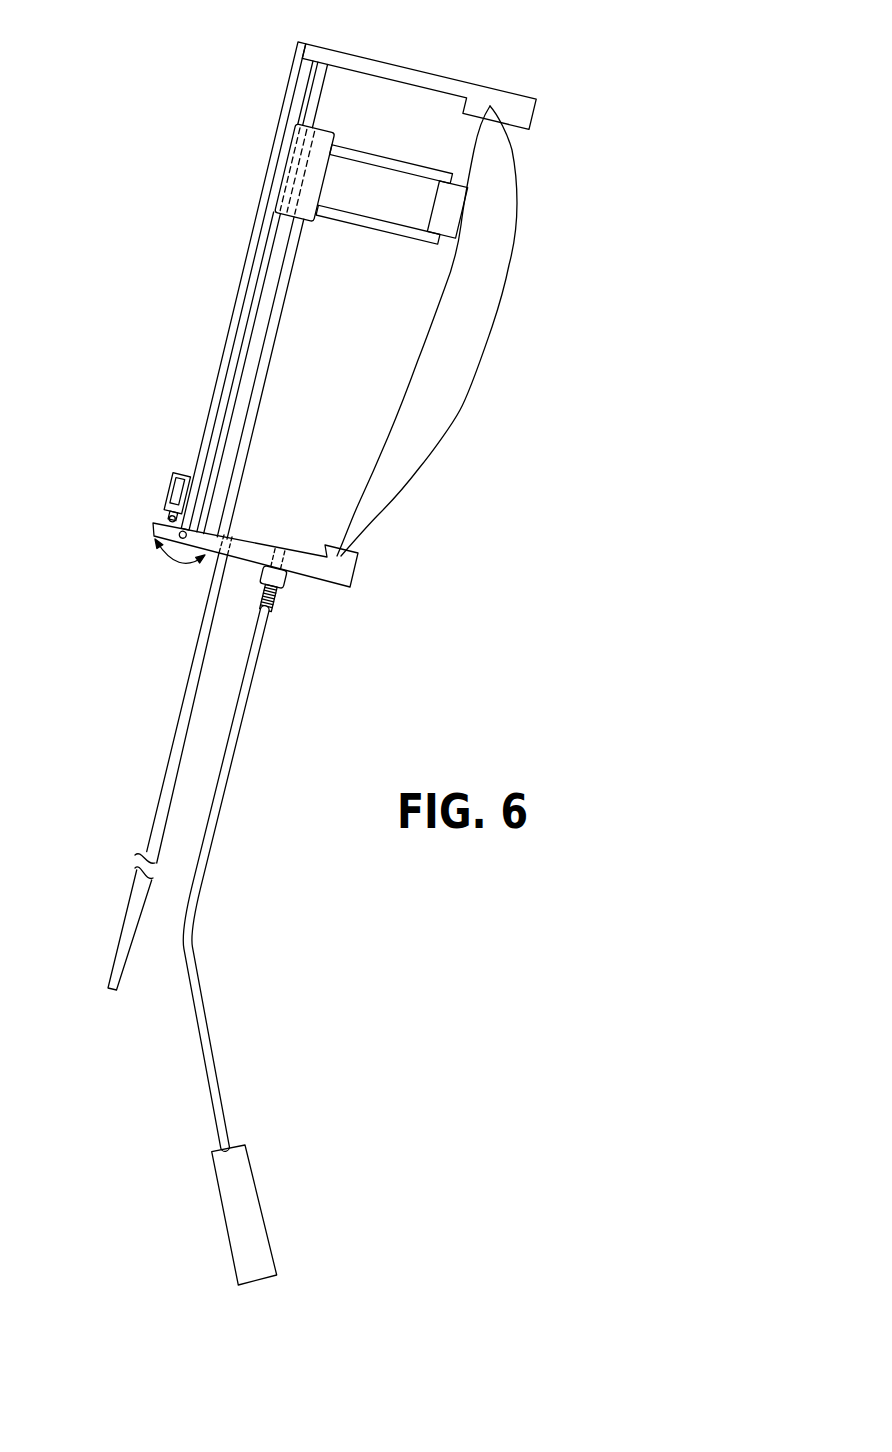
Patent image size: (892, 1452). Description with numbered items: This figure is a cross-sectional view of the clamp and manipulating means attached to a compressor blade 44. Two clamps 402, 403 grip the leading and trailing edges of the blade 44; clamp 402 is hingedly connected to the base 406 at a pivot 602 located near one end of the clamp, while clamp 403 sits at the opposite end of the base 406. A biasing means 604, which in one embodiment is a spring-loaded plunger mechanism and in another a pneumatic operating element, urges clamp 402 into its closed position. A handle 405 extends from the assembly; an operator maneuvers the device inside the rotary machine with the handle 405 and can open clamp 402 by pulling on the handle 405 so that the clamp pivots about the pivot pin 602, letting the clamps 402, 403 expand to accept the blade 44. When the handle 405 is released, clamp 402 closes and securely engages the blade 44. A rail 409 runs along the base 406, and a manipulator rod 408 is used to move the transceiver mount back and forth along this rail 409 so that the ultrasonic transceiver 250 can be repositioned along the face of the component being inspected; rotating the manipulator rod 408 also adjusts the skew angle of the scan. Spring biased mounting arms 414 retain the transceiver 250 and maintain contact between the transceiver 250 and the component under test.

The blade 44 is at (518, 197).
The ultrasonic transceiver 250 is at (447, 218).
The clamp 402 is at (343, 575).
The clamp 403 is at (510, 103).
The handle 405 is at (213, 1040).
The base 406 is at (299, 72).
The manipulator rod 408 is at (128, 933).
The rail 409 is at (317, 65).
The spring biased mounting arms 414 is at (374, 162).
The pivot 602 is at (176, 570).
The biasing means 604 is at (175, 493).